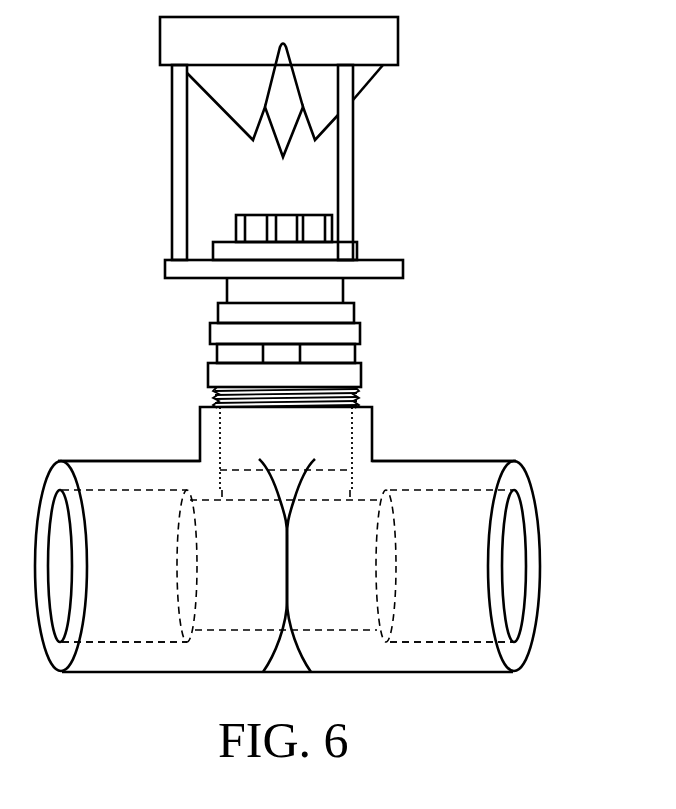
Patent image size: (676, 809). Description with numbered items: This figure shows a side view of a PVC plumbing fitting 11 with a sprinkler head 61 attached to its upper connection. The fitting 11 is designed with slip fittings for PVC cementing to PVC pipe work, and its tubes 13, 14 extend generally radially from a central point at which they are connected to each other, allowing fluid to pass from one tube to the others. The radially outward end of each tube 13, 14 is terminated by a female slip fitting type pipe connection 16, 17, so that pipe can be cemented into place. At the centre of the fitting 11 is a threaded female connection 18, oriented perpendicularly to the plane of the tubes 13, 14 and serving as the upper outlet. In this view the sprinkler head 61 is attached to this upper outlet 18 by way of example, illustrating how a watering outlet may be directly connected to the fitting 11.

The sprinkler head 61 is at (435, 168).
The plumbing fitting 11 is at (100, 370).
The tube 14 is at (131, 461).
The tube 13 is at (443, 461).
The threaded female connection 18 is at (350, 444).
The female slip fitting type pipe connection 17 is at (127, 642).
The female slip fitting type pipe connection 16 is at (454, 642).